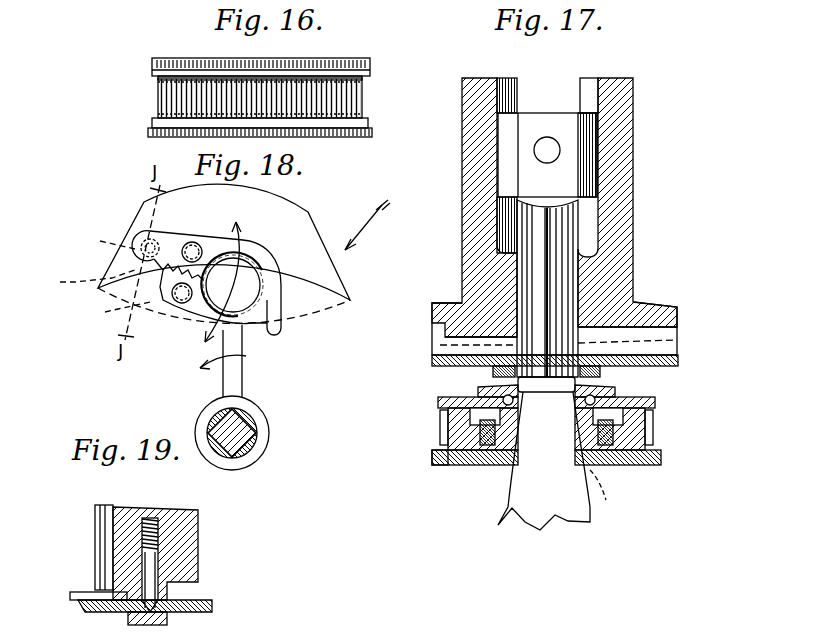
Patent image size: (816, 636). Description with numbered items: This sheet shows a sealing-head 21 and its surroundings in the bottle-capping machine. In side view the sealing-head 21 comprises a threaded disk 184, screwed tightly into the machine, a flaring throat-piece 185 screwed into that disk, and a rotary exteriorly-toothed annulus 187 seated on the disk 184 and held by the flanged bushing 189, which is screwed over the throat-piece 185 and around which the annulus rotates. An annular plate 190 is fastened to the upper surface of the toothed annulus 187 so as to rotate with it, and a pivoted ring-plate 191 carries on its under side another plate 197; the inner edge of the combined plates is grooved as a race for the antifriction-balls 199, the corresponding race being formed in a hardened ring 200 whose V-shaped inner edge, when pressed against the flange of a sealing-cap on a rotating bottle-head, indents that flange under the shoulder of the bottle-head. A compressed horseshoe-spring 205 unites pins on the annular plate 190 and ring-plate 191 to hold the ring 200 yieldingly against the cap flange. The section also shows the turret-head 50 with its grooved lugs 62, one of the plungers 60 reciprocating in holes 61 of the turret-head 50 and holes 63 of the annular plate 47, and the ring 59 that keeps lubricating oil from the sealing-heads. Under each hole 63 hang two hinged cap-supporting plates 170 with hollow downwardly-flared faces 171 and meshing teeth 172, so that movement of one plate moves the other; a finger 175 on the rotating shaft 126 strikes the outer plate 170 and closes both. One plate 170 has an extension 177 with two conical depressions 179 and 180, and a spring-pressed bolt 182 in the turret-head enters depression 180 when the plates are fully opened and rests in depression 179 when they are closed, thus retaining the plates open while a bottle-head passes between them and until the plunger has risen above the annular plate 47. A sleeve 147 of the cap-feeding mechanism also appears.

In FIG. 16, the sealing-head 21 is at (290, 70).
In FIG. 17, the sealing-head 21 is at (455, 466).
In FIG. 16, the annular plate 190 is at (360, 78).
In FIG. 17, the annular plate 190 is at (656, 404).
In FIG. 16, the rotary exteriorly-toothed annulus 187 is at (364, 105).
In FIG. 17, the rotary exteriorly-toothed annulus 187 is at (648, 432).
In FIG. 16, the threaded disk 184 is at (338, 133).
In FIG. 17, the threaded disk 184 is at (612, 466).
In FIG. 17, the grooved lugs 62 is at (636, 112).
In FIG. 17, the plungers 60 is at (585, 240).
In FIG. 17, the holes in the turret-head 61 is at (620, 272).
In FIG. 18, the hinged cap-supporting plates 170 is at (232, 222).
In FIG. 17, the hinged cap-supporting plates 170 is at (456, 302).
In FIG. 17, the turret-head 50 is at (678, 312).
In FIG. 19, the turret-head 50 is at (94, 521).
In FIG. 17, the holes in the annular plate 63 is at (640, 340).
In FIG. 17, the hardened ring 200 is at (605, 378).
In FIG. 17, the antifriction-balls 199 is at (580, 392).
In FIG. 17, the plate 197 is at (520, 440).
In FIG. 18, the annular plate 47 is at (367, 225).
In FIG. 17, the annular plate 47 is at (470, 383).
In FIG. 19, the annular plate 47 is at (213, 604).
In FIG. 17, the ring-plate 191 is at (478, 425).
In FIG. 17, the horseshoe-spring 205 is at (440, 432).
In FIG. 17, the flanged bushing 189 is at (445, 470).
In FIG. 17, the flaring throat-piece 185 is at (615, 498).
In FIG. 18, the hollow downwardly-flared faces 171 is at (312, 214).
In FIG. 18, the sleeve 147 is at (335, 325).
In FIG. 18, the conical depression 180 is at (140, 236).
In FIG. 18, the conical depression 179 is at (98, 241).
In FIG. 18, the extension 177 is at (81, 281).
In FIG. 19, the extension 177 is at (170, 622).
In FIG. 18, the teeth 172 is at (107, 311).
In FIG. 18, the finger 175 is at (243, 378).
In FIG. 18, the shaft 126 is at (260, 432).
In FIG. 19, the spring-pressed bolt 182 is at (212, 555).
In FIG. 19, the ring 59 is at (82, 590).